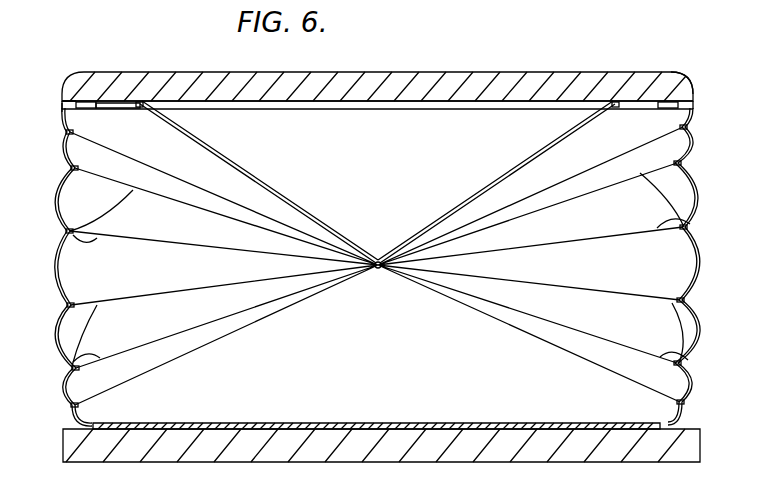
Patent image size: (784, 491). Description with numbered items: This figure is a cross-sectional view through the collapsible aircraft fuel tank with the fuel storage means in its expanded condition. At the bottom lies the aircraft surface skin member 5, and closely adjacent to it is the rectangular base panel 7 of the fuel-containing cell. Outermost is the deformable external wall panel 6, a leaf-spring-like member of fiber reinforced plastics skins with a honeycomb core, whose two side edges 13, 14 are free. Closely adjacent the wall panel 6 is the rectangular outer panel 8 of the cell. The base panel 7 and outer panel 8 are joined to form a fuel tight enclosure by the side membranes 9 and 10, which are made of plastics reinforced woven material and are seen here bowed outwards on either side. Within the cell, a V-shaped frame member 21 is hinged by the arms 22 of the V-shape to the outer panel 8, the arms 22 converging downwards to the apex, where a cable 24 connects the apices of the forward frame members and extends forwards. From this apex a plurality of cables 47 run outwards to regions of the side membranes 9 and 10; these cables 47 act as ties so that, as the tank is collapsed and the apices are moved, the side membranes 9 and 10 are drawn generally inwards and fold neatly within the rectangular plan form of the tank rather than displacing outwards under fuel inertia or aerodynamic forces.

The surface skin member 5 is at (163, 462).
The deformable external wall panel 6 is at (103, 73).
The base panel 7 is at (262, 429).
The outer panel 8 is at (200, 101).
The side membrane 9 is at (70, 170).
The side membrane 10 is at (693, 128).
The side edge 13 is at (62, 103).
The side edge 14 is at (690, 74).
The V-shaped frame member 21 is at (168, 109).
The arms 22 is at (248, 172).
The cable 24 is at (378, 269).
The cables 47 is at (68, 233).